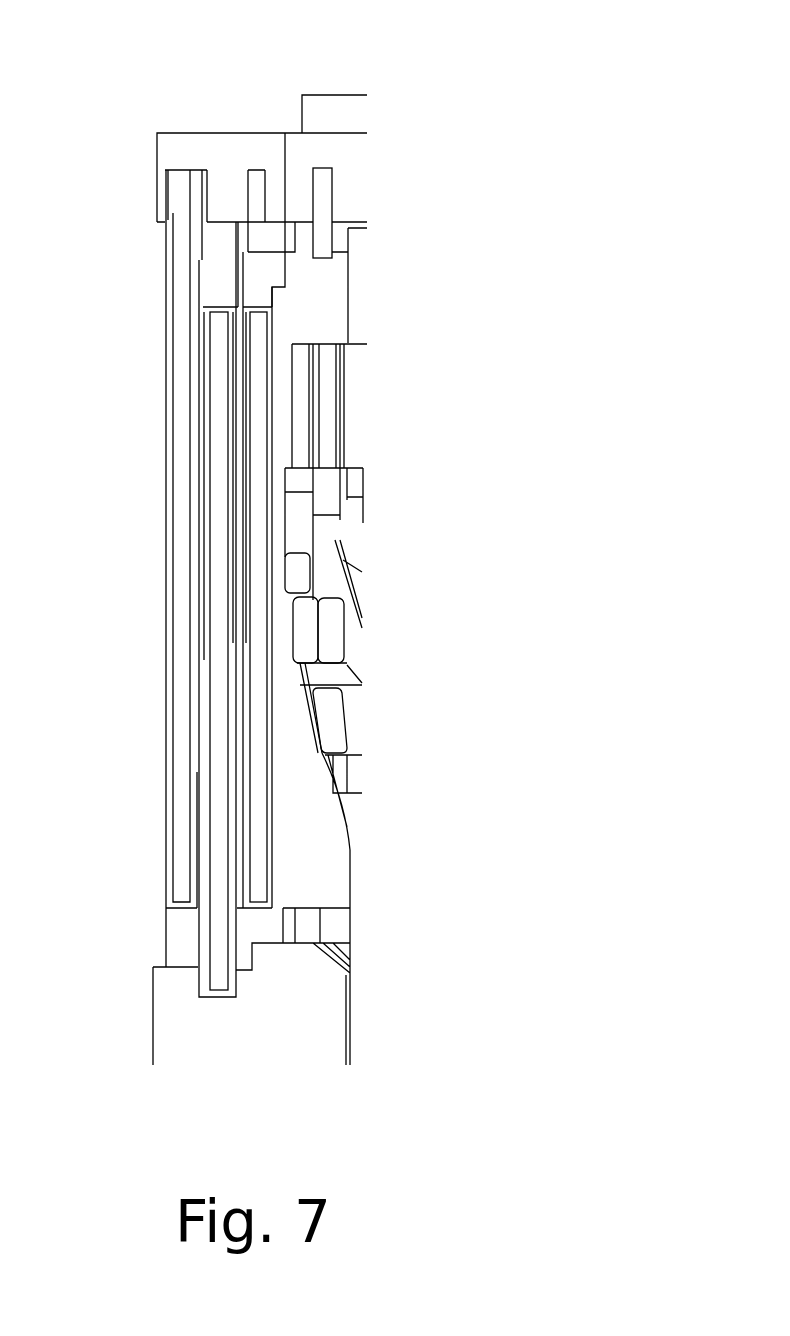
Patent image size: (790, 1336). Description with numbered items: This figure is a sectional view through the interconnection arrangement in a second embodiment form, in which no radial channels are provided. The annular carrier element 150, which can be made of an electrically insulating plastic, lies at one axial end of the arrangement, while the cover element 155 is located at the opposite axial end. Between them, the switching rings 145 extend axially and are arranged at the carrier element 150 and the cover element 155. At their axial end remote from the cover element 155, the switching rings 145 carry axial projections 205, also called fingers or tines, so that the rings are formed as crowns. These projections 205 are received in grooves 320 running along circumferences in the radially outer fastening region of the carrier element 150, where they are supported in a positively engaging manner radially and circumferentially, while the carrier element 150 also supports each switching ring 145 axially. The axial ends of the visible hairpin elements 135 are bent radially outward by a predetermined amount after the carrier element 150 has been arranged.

The switching rings 145 is at (188, 185).
The cover element 155 is at (157, 148).
The hairpin elements 135 is at (332, 410).
The axial projections 205 is at (242, 953).
The grooves 320 is at (200, 978).
The carrier element 150 is at (153, 1027).